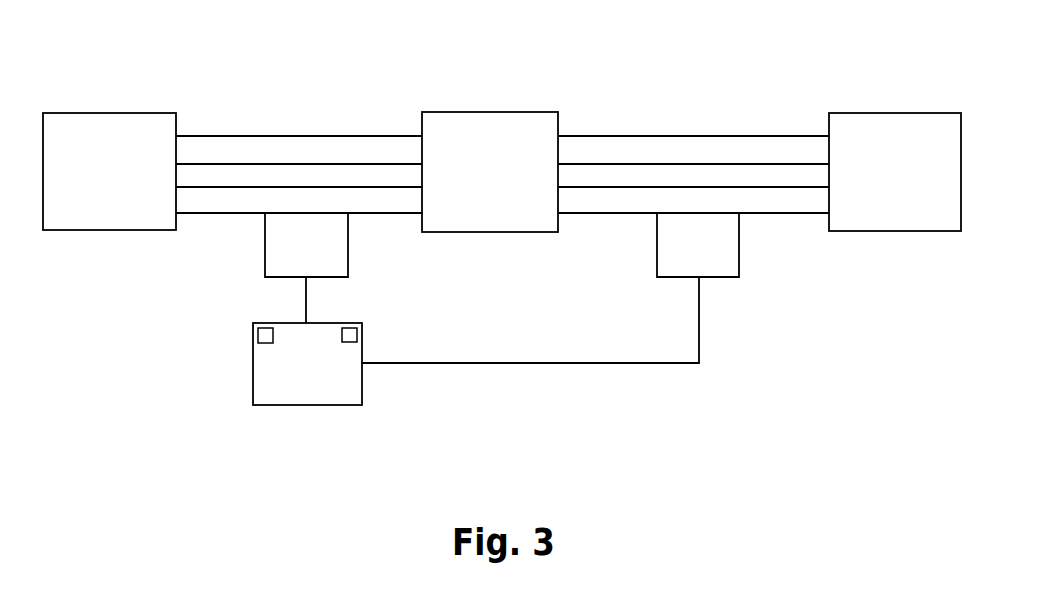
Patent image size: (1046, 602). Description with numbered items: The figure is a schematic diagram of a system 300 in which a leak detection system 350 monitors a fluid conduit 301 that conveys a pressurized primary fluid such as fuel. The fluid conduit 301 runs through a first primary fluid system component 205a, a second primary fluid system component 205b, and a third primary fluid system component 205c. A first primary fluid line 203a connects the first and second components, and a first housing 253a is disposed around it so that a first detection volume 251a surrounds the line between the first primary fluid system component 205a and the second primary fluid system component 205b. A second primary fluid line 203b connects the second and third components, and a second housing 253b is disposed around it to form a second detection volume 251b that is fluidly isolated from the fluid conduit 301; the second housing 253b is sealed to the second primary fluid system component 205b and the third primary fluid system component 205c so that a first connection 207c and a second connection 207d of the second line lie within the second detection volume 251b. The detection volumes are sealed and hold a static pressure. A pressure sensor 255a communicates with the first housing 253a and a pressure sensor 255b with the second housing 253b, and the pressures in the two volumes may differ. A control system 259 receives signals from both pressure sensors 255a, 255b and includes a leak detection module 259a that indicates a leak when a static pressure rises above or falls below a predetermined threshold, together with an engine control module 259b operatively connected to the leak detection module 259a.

The system 300 is at (83, 40).
The first primary fluid system component 205a is at (117, 112).
The second primary fluid system component 205b is at (470, 112).
The third primary fluid system component 205c is at (878, 113).
The fluid conduit 301 is at (192, 162).
The first primary fluid line 203a is at (232, 178).
The second primary fluid line 203b is at (572, 175).
The first housing 253a is at (342, 135).
The second housing 253b is at (700, 135).
The first detection volume 251a is at (413, 148).
The second detection volume 251b is at (812, 148).
The first connection 207c is at (568, 188).
The second connection 207d is at (818, 188).
The pressure sensor 255a is at (349, 253).
The pressure sensor 255b is at (739, 260).
The control system 259 is at (315, 407).
The leak detection module 259a is at (357, 332).
The engine control module 259b is at (258, 330).
The leak detection system 350 is at (517, 383).